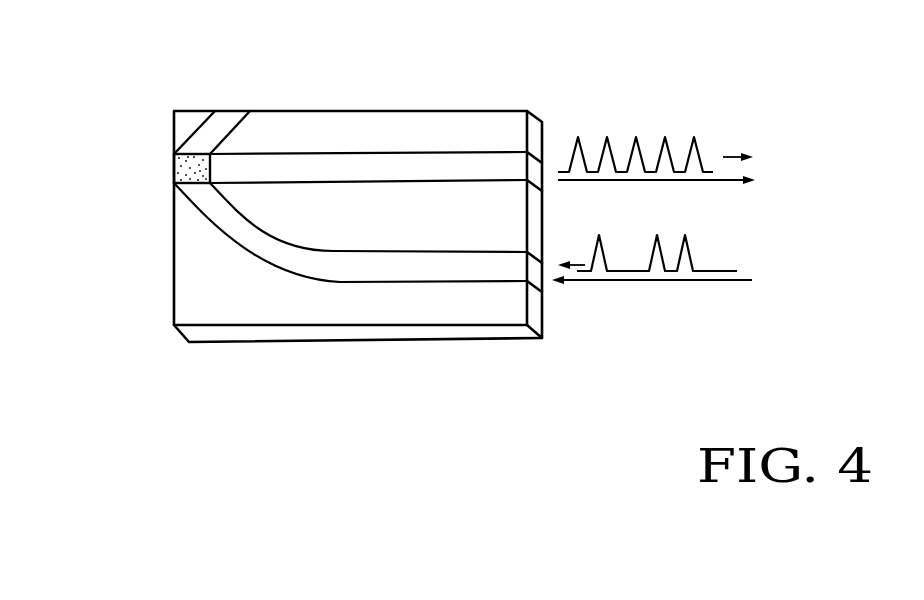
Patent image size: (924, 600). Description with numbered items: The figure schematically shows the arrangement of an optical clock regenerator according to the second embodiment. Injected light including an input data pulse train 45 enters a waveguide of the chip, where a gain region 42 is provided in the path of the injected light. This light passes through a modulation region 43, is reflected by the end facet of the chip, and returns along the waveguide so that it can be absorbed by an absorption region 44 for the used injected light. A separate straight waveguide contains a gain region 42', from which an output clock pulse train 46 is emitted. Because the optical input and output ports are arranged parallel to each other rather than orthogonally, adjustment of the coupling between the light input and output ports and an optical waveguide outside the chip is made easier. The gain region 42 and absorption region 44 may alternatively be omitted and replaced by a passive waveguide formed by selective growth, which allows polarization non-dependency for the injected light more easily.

The gain region 42 is at (350, 295).
The gain region 42' is at (404, 109).
The modulation region 43 is at (172, 160).
The absorption region 44 is at (227, 118).
The input data pulse train 45 is at (702, 280).
The output clock pulse train 46 is at (713, 138).